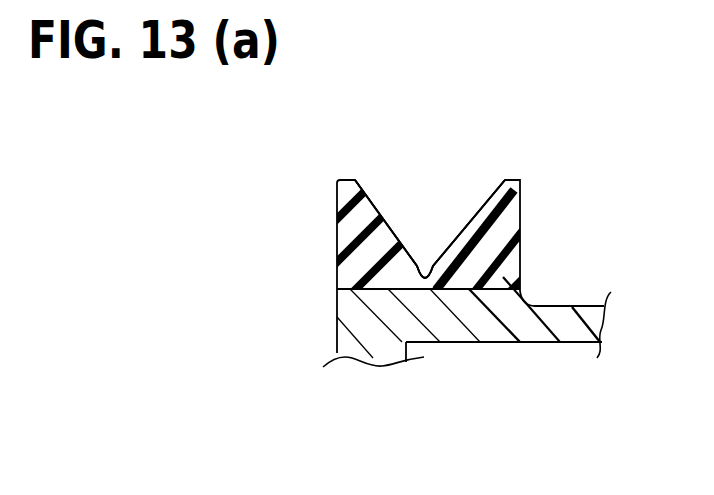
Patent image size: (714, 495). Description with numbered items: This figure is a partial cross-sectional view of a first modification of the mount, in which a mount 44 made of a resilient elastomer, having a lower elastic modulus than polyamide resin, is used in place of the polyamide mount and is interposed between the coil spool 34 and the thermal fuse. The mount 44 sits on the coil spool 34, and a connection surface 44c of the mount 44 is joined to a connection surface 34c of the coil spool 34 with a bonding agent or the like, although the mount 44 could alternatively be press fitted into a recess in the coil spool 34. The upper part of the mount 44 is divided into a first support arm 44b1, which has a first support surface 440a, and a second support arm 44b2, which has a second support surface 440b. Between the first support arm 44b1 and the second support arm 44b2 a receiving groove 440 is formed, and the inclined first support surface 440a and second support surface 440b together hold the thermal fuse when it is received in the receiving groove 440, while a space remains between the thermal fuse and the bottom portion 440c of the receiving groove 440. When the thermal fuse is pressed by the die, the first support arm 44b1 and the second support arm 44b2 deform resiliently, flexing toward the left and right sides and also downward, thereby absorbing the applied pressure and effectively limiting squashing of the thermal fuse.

The coil spool 34 is at (555, 307).
The connection surface 34c is at (345, 289).
The mount 44 is at (503, 280).
The first support arm 44b1 is at (347, 232).
The second support arm 44b2 is at (507, 225).
The connection surface 44c is at (461, 289).
The receiving groove 440 is at (499, 192).
The first support surface 440a is at (364, 190).
The second support surface 440b is at (482, 225).
The bottom portion 440c is at (427, 268).